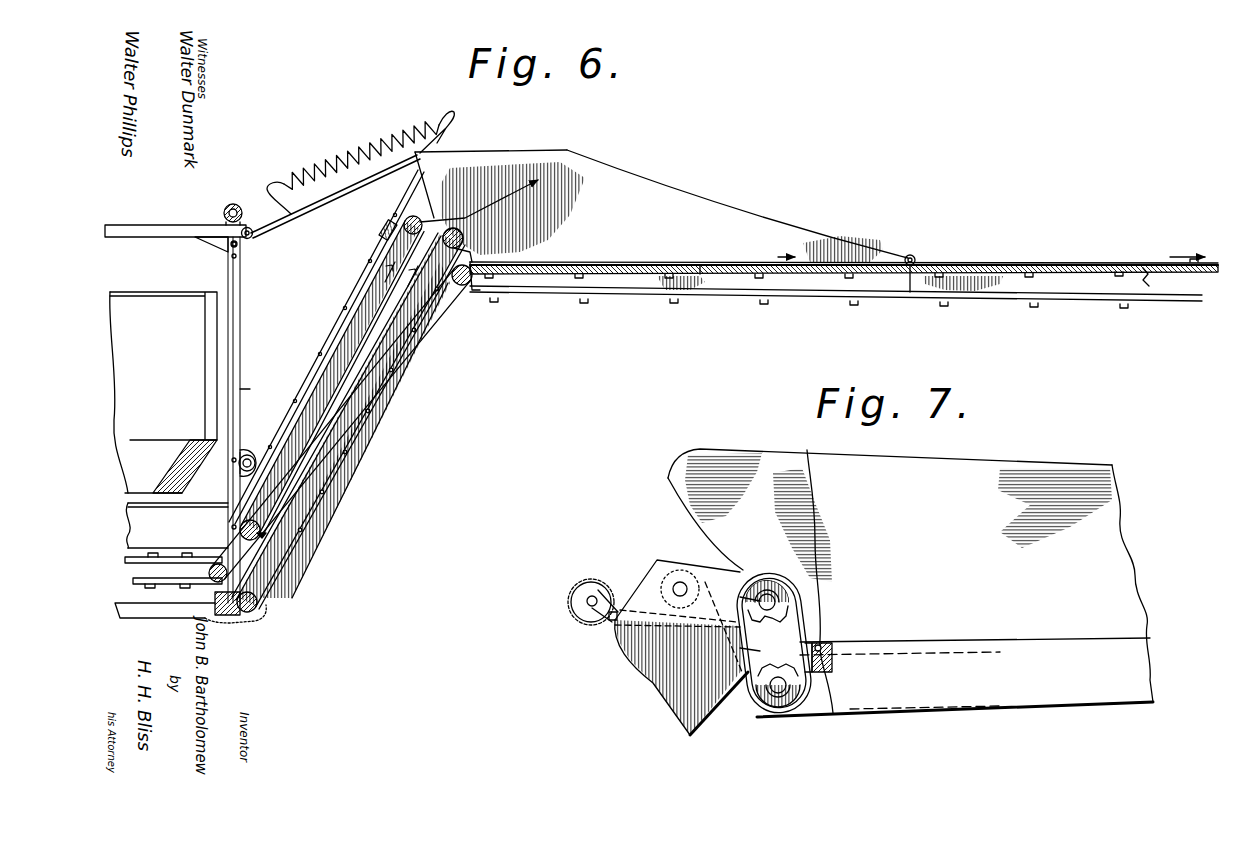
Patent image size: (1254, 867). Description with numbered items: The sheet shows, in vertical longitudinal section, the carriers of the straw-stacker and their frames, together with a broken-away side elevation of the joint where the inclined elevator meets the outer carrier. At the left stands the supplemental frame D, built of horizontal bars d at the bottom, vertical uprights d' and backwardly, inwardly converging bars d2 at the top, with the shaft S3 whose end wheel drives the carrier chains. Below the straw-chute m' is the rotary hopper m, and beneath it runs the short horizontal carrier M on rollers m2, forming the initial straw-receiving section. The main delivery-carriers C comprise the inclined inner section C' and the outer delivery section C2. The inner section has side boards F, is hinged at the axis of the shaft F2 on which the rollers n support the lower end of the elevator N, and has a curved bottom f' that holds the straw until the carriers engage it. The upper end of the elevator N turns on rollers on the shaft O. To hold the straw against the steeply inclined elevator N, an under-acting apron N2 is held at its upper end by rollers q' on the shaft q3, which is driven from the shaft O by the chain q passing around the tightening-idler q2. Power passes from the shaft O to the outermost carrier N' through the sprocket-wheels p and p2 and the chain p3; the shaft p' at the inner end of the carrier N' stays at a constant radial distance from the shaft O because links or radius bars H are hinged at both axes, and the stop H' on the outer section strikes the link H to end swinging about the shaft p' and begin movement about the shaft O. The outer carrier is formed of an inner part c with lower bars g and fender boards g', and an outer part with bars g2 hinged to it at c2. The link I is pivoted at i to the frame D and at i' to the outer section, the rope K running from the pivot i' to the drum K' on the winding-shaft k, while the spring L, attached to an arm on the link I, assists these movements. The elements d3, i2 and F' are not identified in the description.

In FIG. 6, the converging bars d2 is at (150, 236).
In FIG. 6, the frame D is at (232, 420).
In FIG. 6, the vertical uprights d' is at (253, 391).
In FIG. 6, the bolt d3 is at (248, 243).
In FIG. 6, the shaft S3 is at (225, 211).
In FIG. 6, the pivot i2 is at (255, 219).
In FIG. 6, the link I is at (335, 196).
In FIG. 6, the spring L is at (356, 142).
In FIG. 6, the pivot i is at (272, 185).
In FIG. 6, the pivot i' is at (437, 121).
In FIG. 6, the main delivery-carriers C is at (502, 256).
In FIG. 7, the main delivery-carriers C is at (910, 593).
In FIG. 6, the inner part of outer carrier c is at (737, 204).
In FIG. 6, the rollers q' is at (427, 202).
In FIG. 7, the rollers q' is at (654, 581).
In FIG. 6, the tightening-idler q2 is at (388, 225).
In FIG. 7, the tightening-idler q2 is at (582, 620).
In FIG. 6, the shaft q3 is at (479, 199).
In FIG. 7, the shaft q3 is at (673, 587).
In FIG. 6, the chain q is at (453, 238).
In FIG. 7, the chain q is at (605, 628).
In FIG. 6, the sprocket-wheel p is at (466, 299).
In FIG. 6, the links or radius bars H is at (479, 249).
In FIG. 7, the links or radius bars H is at (797, 642).
In FIG. 6, the under-acting belt or apron N2 is at (365, 290).
In FIG. 6, the side bars or boards F is at (335, 380).
In FIG. 7, the side bars or boards F is at (719, 709).
In FIG. 6, the elevator N is at (336, 416).
In FIG. 6, the belt return run F' is at (350, 420).
In FIG. 6, the inner stacker-section C' is at (730, 423).
In FIG. 7, the inner stacker-section C' is at (677, 677).
In FIG. 6, the rope or cable K is at (340, 424).
In FIG. 6, the winding-shaft k is at (239, 465).
In FIG. 6, the drum K' is at (252, 443).
In FIG. 6, the rollers n is at (252, 628).
In FIG. 6, the shaft F2 is at (260, 603).
In FIG. 6, the roller m2 is at (199, 572).
In FIG. 6, the horizontal carrier M is at (161, 571).
In FIG. 6, the rotary hopper m is at (177, 525).
In FIG. 6, the straw-chute m' is at (163, 392).
In FIG. 6, the horizontal bars d is at (177, 626).
In FIG. 6, the curved bottom f' is at (235, 637).
In FIG. 6, the outer stacker-section C2 is at (850, 292).
In FIG. 7, the outer stacker-section C2 is at (970, 532).
In FIG. 6, the outermost carrier N' is at (836, 310).
In FIG. 7, the outermost carrier N' is at (975, 673).
In FIG. 6, the hinge c2 is at (908, 255).
In FIG. 6, the sprocket-wheel p2 is at (703, 265).
In FIG. 7, the sprocket-wheel p2 is at (770, 689).
In FIG. 6, the hopper or fender boards g' is at (660, 171).
In FIG. 7, the hopper or fender boards g' is at (1145, 583).
In FIG. 6, the lower bars g is at (630, 314).
In FIG. 7, the lower bars g is at (1137, 726).
In FIG. 6, the bars g2 is at (1106, 294).
In FIG. 7, the stop H' is at (863, 636).
In FIG. 7, the shaft O is at (776, 600).
In FIG. 7, the shaft p' is at (725, 629).
In FIG. 7, the chain p3 is at (740, 650).